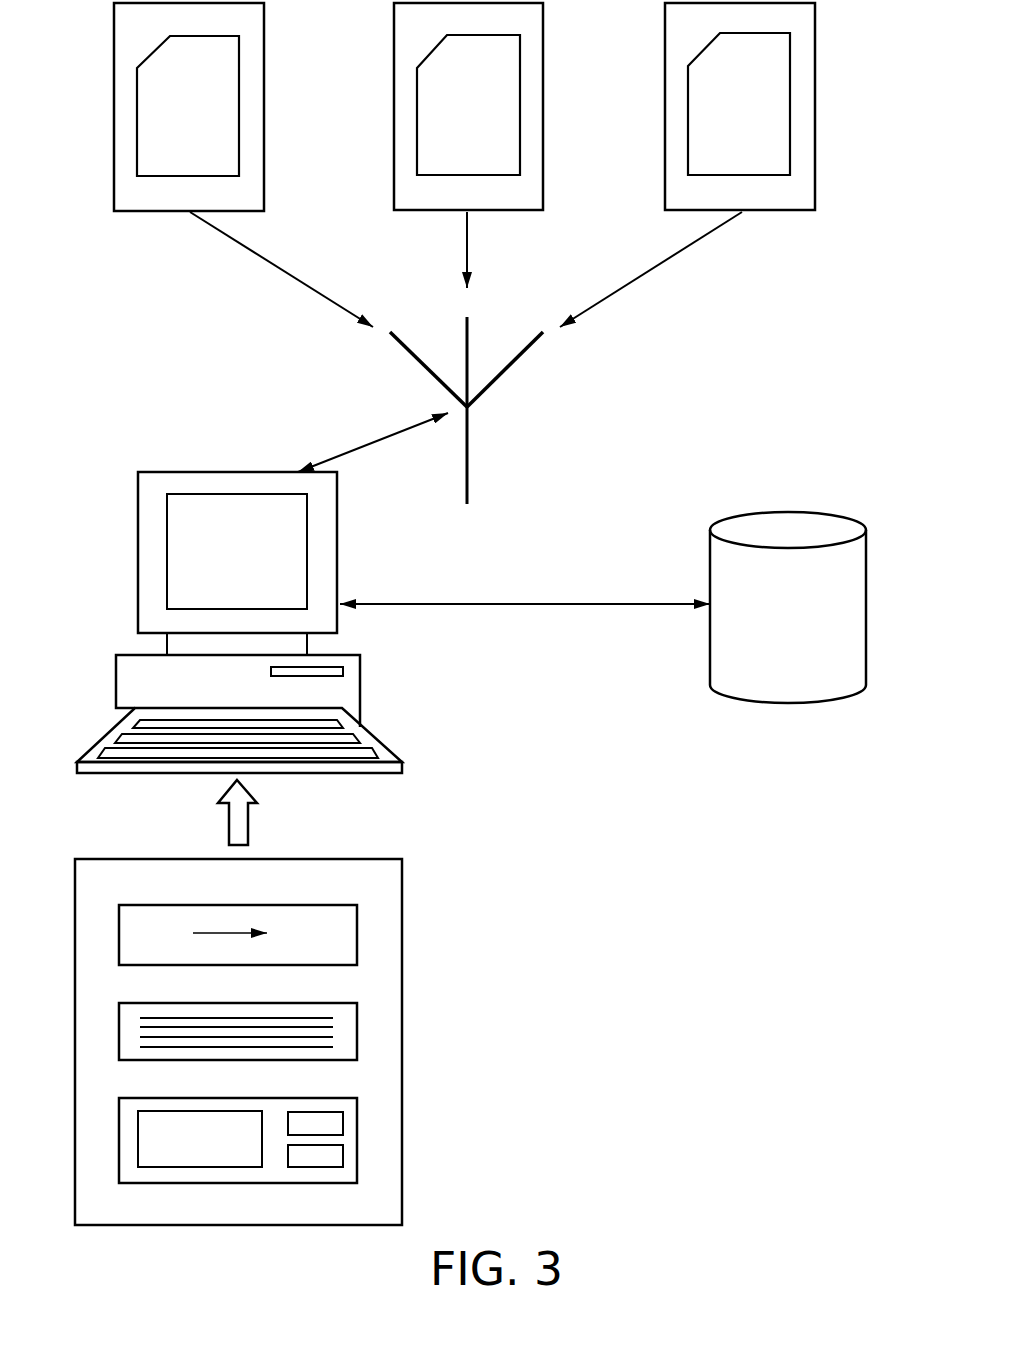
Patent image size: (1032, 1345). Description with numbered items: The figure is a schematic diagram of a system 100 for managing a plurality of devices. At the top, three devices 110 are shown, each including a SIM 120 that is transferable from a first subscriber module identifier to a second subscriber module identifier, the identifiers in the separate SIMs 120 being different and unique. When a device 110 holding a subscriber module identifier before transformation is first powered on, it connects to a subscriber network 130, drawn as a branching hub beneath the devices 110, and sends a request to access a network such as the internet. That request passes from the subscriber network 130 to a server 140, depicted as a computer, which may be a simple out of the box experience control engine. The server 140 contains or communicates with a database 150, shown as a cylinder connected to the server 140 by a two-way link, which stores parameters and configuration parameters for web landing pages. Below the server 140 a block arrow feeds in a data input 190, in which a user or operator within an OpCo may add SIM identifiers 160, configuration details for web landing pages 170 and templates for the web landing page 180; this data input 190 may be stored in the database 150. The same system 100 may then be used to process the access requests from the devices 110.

The system 100 is at (848, 47).
The device 110 is at (256, 203).
The SIM 120 is at (210, 76).
The subscriber network 130 is at (528, 481).
The server 140 is at (344, 704).
The database 150 is at (808, 629).
The SIM identifiers 160 is at (117, 938).
The configuration details for web landing pages 170 is at (117, 1037).
The templates for the web landing page 180 is at (117, 1133).
The data input 190 is at (391, 1221).